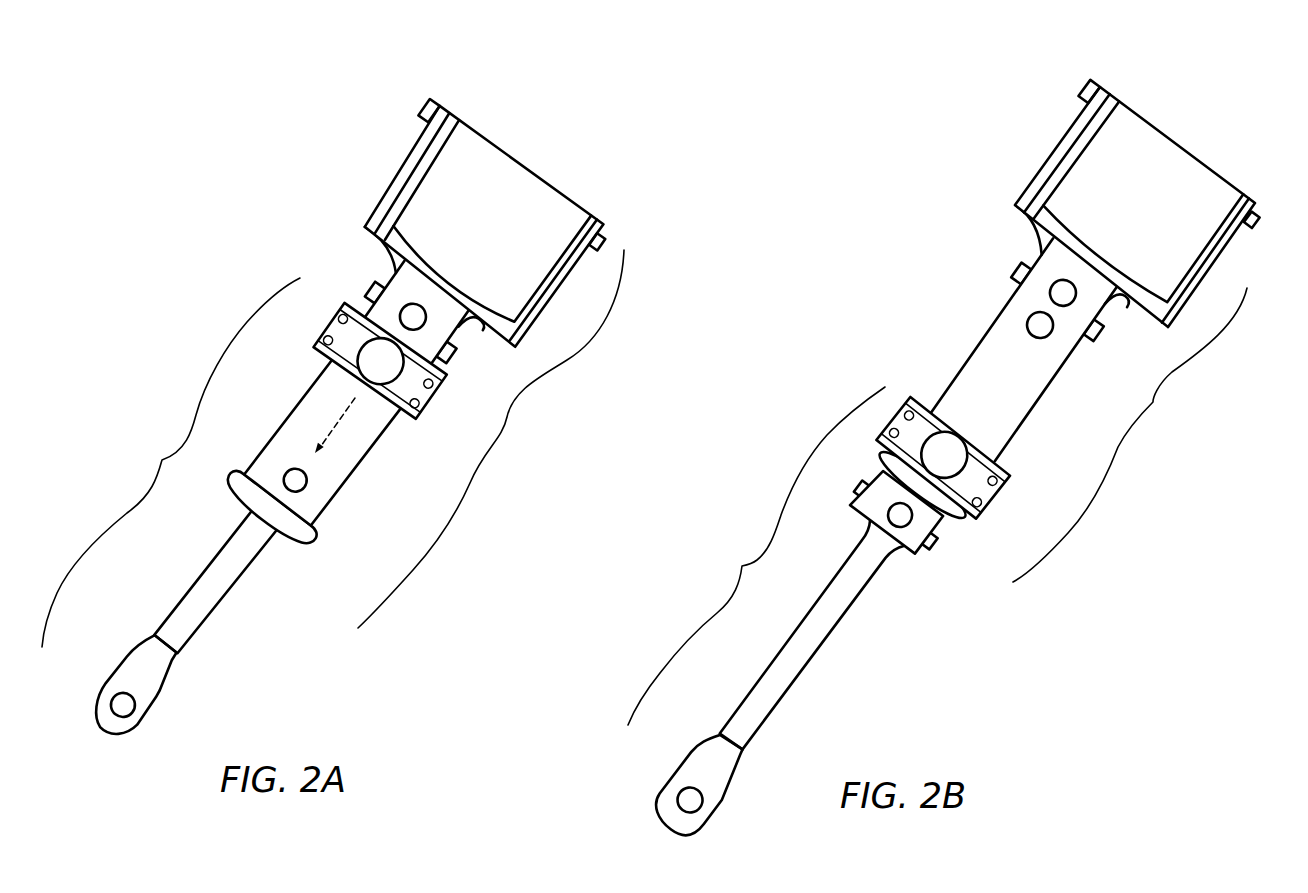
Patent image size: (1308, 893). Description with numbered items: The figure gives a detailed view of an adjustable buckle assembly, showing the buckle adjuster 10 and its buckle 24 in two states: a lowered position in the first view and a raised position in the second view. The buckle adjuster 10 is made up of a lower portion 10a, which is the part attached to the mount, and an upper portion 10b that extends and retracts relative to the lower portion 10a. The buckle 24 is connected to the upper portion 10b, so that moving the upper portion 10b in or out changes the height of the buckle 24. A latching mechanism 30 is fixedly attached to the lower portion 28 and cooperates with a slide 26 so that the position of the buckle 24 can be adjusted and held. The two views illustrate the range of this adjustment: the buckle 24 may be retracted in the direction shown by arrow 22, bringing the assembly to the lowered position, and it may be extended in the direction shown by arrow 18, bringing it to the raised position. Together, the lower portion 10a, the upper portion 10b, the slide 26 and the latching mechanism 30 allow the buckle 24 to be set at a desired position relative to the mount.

In FIG. 2A, the buckle adjuster 10 is at (338, 421).
In FIG. 2B, the buckle adjuster 10 is at (935, 440).
In FIG. 2A, the lower portion 10a is at (160, 462).
In FIG. 2B, the lower portion 10a is at (742, 566).
In FIG. 2A, the upper portion 10b is at (507, 418).
In FIG. 2B, the upper portion 10b is at (1153, 402).
In FIG. 2B, the arrow 18 is at (991, 388).
In FIG. 2A, the arrow 22 is at (341, 416).
In FIG. 2A, the buckle 24 is at (513, 188).
In FIG. 2B, the buckle 24 is at (1172, 175).
In FIG. 2B, the slide 26 is at (1013, 334).
In FIG. 2A, the lower portion 28 is at (220, 570).
In FIG. 2B, the lower portion 28 is at (835, 606).
In FIG. 2A, the latching mechanism 30 is at (343, 333).
In FIG. 2B, the latching mechanism 30 is at (943, 458).